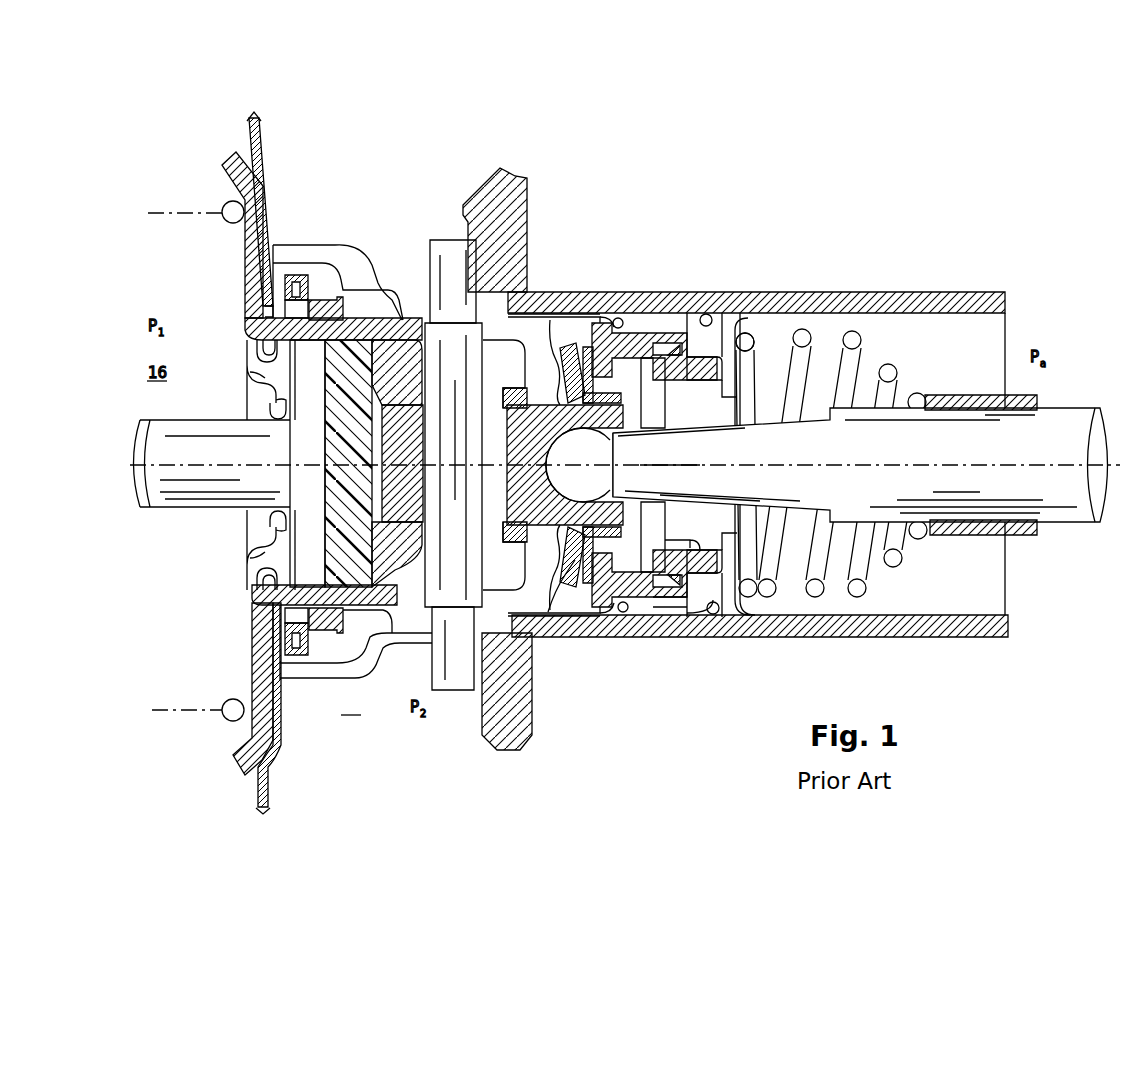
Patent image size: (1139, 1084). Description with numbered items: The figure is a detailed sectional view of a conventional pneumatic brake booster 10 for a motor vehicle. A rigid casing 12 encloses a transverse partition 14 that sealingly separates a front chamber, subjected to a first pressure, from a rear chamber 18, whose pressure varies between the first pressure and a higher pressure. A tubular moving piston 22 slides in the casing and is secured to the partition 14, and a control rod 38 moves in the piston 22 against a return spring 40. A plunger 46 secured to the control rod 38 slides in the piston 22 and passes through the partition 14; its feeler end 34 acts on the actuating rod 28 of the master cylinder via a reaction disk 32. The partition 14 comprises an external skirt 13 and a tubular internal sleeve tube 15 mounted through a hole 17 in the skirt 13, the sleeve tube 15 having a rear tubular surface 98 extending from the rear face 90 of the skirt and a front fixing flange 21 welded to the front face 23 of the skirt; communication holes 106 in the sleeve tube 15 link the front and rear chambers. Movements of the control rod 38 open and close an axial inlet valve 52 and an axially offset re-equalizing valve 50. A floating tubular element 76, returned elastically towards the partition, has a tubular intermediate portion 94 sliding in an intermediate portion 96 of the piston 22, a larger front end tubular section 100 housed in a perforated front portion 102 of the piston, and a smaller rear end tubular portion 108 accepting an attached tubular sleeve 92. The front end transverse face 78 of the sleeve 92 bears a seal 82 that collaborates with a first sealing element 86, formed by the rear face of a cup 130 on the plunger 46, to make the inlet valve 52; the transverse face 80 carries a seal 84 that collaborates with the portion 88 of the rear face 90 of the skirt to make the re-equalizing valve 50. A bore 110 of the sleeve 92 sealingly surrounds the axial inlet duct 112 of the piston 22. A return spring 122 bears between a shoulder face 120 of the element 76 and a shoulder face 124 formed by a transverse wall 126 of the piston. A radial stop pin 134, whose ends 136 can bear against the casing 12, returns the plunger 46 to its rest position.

The pneumatic brake booster 10 is at (882, 207).
The rigid casing 12 is at (512, 205).
The external skirt 13 is at (273, 142).
The transverse partition 14 is at (292, 155).
The tubular internal sleeve tube 15 is at (258, 600).
The hole 17 is at (258, 310).
The rear chamber 18 is at (351, 707).
The transverse front fixing flange 21 is at (263, 180).
The tubular moving piston 22 is at (815, 243).
The front face 23 is at (255, 245).
The actuating rod 28 is at (175, 512).
The reaction disk 32 is at (265, 525).
The feeler end 34 is at (335, 490).
The control rod 38 is at (1072, 520).
The return spring 40 is at (855, 360).
The plunger 46 is at (525, 450).
The re-equalizing valve 50 is at (258, 320).
The inlet valve 52 is at (588, 595).
The floating tubular element 76 is at (572, 300).
The front end transverse face 78 is at (600, 325).
The transverse face 80 is at (322, 298).
The second sealing element 82 is at (650, 333).
The second sealing element 84 is at (300, 275).
The first transverse sealing element 86 is at (548, 322).
The complementary first transverse sealing element 88 is at (286, 272).
The rear face 90 is at (283, 716).
The attached tubular sleeve 92 is at (706, 314).
The tubular intermediate portion 94 is at (538, 310).
The intermediate portion 96 is at (667, 575).
The rear tubular surface 98 is at (405, 385).
The front end tubular section 100 is at (395, 300).
The perforated front portion 102 is at (360, 663).
The communication holes 106 is at (250, 372).
The rear end tubular portion 108 is at (685, 335).
The bore 110 is at (668, 365).
The axial inlet duct 112 is at (725, 375).
The shoulder face 120 is at (620, 318).
The return spring 122 is at (680, 618).
The shoulder face 124 is at (710, 615).
The transverse wall 126 is at (748, 340).
The cup 130 is at (550, 612).
The radial stop pin 134 is at (473, 583).
The ends 136 is at (445, 240).